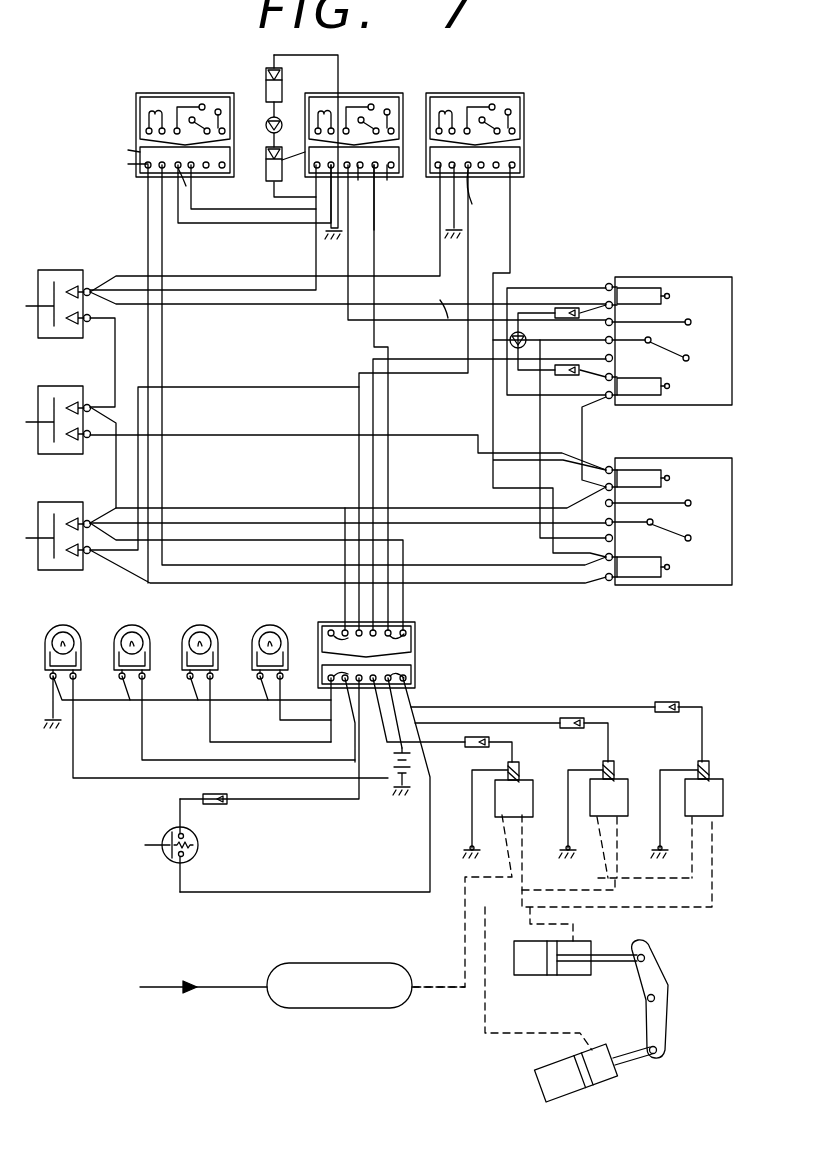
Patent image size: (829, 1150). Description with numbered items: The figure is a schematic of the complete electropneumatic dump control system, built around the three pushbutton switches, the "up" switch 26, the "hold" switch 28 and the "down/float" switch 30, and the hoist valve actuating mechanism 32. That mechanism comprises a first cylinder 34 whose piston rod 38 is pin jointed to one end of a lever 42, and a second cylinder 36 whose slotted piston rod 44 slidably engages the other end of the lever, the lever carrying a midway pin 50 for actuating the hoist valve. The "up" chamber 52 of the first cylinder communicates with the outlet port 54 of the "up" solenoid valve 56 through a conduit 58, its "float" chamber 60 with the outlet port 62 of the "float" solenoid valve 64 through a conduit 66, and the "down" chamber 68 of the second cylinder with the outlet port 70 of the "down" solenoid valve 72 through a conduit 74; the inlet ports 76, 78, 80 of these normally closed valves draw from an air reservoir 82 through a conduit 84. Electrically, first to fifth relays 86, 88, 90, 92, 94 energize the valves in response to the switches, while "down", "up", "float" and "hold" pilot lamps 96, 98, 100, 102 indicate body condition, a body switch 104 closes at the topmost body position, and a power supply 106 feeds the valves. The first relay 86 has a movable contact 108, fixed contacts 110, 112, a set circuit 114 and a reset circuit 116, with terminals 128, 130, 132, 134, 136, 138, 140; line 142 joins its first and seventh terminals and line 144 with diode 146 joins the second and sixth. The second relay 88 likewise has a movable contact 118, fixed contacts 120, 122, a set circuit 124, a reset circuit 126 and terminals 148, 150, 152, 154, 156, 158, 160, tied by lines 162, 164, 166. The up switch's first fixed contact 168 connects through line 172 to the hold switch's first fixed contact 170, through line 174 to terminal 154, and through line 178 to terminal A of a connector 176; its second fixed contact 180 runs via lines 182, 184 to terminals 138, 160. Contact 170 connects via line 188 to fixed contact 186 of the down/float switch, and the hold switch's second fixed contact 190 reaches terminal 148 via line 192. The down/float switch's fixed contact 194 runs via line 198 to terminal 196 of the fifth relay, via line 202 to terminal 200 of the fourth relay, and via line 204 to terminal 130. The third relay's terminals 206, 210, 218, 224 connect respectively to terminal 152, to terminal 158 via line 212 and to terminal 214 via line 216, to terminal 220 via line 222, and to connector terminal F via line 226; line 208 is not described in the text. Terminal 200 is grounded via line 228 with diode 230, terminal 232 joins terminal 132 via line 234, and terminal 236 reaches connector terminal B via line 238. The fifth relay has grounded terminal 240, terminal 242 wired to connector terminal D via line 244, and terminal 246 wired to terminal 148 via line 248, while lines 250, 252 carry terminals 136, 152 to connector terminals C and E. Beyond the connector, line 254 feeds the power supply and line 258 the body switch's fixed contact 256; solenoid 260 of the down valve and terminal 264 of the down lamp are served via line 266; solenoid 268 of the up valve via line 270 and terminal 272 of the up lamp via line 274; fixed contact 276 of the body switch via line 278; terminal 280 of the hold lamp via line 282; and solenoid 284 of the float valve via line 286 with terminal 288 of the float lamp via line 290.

The "up" pushbutton switch 26 is at (42, 518).
The "hold" pushbutton switch 28 is at (42, 402).
The "down/float" pushbutton switch 30 is at (42, 286).
The hoist valve actuating mechanism 32 is at (674, 1000).
The first cylinder 34 is at (584, 942).
The second cylinder 36 is at (530, 1084).
The piston rod 38 is at (610, 964).
The lever 42 is at (660, 968).
The piston rod 44 is at (636, 1062).
The pin 50 is at (634, 1000).
The "up" chamber 52 is at (558, 978).
The outlet port 54 is at (532, 826).
The "up" solenoid valve 56 is at (522, 774).
The conduit 58 is at (520, 908).
The "float" chamber 60 is at (492, 988).
The outlet port 62 is at (674, 814).
The "float" solenoid valve 64 is at (700, 764).
The conduit 66 is at (708, 876).
The "down" chamber 68 is at (602, 1050).
The outlet port 70 is at (614, 826).
The "down" solenoid valve 72 is at (606, 770).
The conduit 74 is at (623, 890).
The inlet port 76 is at (485, 814).
The inlet port 78 is at (694, 820).
The inlet port 80 is at (581, 814).
The air reservoir 82 is at (356, 964).
The conduit 84 is at (428, 998).
The first relay 86 is at (648, 270).
The second relay 88 is at (686, 590).
The third relay 90 is at (194, 86).
The fourth relay 92 is at (368, 86).
The fifth relay 94 is at (456, 86).
The "down" pilot lamp 96 is at (44, 656).
The "up" pilot lamp 98 is at (112, 652).
The "float" pilot lamp 100 is at (182, 652).
The "hold" pilot lamp 102 is at (254, 652).
The body switch 104 is at (206, 850).
The electric power supply 106 is at (394, 789).
The movable contact 108 is at (688, 350).
The fixed contact 110 is at (690, 322).
The fixed contact 112 is at (690, 362).
The set circuit 114 is at (662, 286).
The reset circuit 116 is at (671, 396).
The movable contact 118 is at (678, 530).
The fixed contact 120 is at (686, 502).
The fixed contact 122 is at (688, 542).
The set circuit 124 is at (654, 470).
The reset circuit 126 is at (649, 578).
The first terminal 128 is at (608, 282).
The second terminal 130 is at (606, 300).
The third terminal 132 is at (576, 429).
The fourth terminal 134 is at (651, 335).
The fifth terminal 136 is at (603, 352).
The sixth terminal 138 is at (612, 376).
The seventh terminal 140 is at (606, 398).
The line 142 is at (546, 288).
The line 144 is at (528, 298).
The diode 146 is at (494, 338).
The first terminal 148 is at (608, 466).
The second terminal 150 is at (606, 484).
The third terminal 152 is at (620, 498).
The fourth terminal 154 is at (602, 530).
The fifth terminal 156 is at (614, 546).
The sixth terminal 158 is at (604, 566).
The seventh terminal 160 is at (610, 580).
The line 162 is at (576, 416).
The line 164 is at (540, 494).
The line 166 is at (530, 408).
The first fixed contact 168 is at (88, 518).
The first fixed contact 170 is at (90, 404).
The line 172 is at (134, 466).
The line 174 is at (454, 526).
The connector 176 is at (422, 614).
The line 178 is at (403, 540).
The second fixed contact 180 is at (112, 553).
The line 182 is at (274, 386).
The line 184 is at (166, 566).
The fixed contact 186 is at (100, 322).
The line 188 is at (114, 326).
The second fixed contact 190 is at (92, 440).
The line 192 is at (406, 435).
The fixed contact 194 is at (102, 276).
The terminal 196 is at (409, 173).
The line 198 is at (410, 272).
The terminal 200 is at (282, 197).
The line 202 is at (307, 254).
The line 204 is at (282, 316).
The terminal 206 is at (122, 163).
The conductor 208 is at (240, 506).
The terminal 210 is at (118, 147).
The line 212 is at (491, 563).
The terminal 214 is at (301, 146).
The line 216 is at (192, 223).
The terminal 218 is at (197, 185).
The terminal 220 is at (386, 183).
The line 222 is at (232, 210).
The terminal 224 is at (264, 154).
The line 226 is at (222, 344).
The line 228 is at (340, 57).
The diode 230 is at (268, 125).
The terminal 232 is at (477, 242).
The line 234 is at (444, 302).
The terminal 236 is at (394, 197).
The line 238 is at (368, 344).
The terminal 240 is at (483, 196).
The terminal 242 is at (460, 182).
The line 244 is at (468, 257).
The terminal 246 is at (518, 164).
The line 248 is at (492, 422).
The line 250 is at (361, 462).
The line 252 is at (344, 507).
The line 254 is at (410, 738).
The fixed contact 256 is at (186, 858).
The line 258 is at (256, 896).
The solenoid 260 is at (602, 760).
The terminal 264 is at (70, 680).
The line 266 is at (74, 724).
The solenoid 268 is at (510, 744).
The line 270 is at (454, 732).
The terminal 272 is at (138, 680).
The line 274 is at (142, 722).
The fixed contact 276 is at (194, 836).
The line 278 is at (284, 812).
The terminal 280 is at (280, 720).
The line 282 is at (284, 740).
The solenoid 284 is at (697, 760).
The line 286 is at (560, 708).
The terminal 288 is at (210, 680).
The line 290 is at (209, 730).